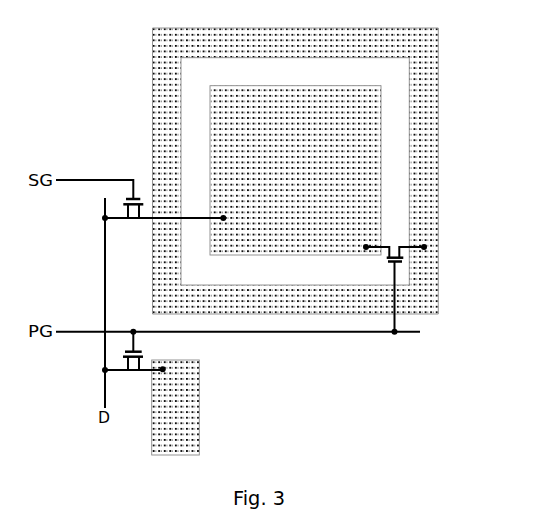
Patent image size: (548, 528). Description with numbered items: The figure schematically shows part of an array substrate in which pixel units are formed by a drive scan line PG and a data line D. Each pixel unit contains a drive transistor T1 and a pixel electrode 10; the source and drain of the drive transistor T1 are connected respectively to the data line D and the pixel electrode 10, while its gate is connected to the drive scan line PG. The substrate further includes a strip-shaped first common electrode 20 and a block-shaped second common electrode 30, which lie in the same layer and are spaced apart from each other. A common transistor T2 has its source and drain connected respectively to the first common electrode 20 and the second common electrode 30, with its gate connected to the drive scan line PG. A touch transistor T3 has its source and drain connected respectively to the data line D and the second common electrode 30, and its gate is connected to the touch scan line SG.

The pixel electrode 10 is at (187, 383).
The first common electrode 20 is at (422, 198).
The second common electrode 30 is at (343, 119).
The drive transistor T1 is at (134, 351).
The common transistor T2 is at (395, 289).
The touch transistor T3 is at (164, 220).